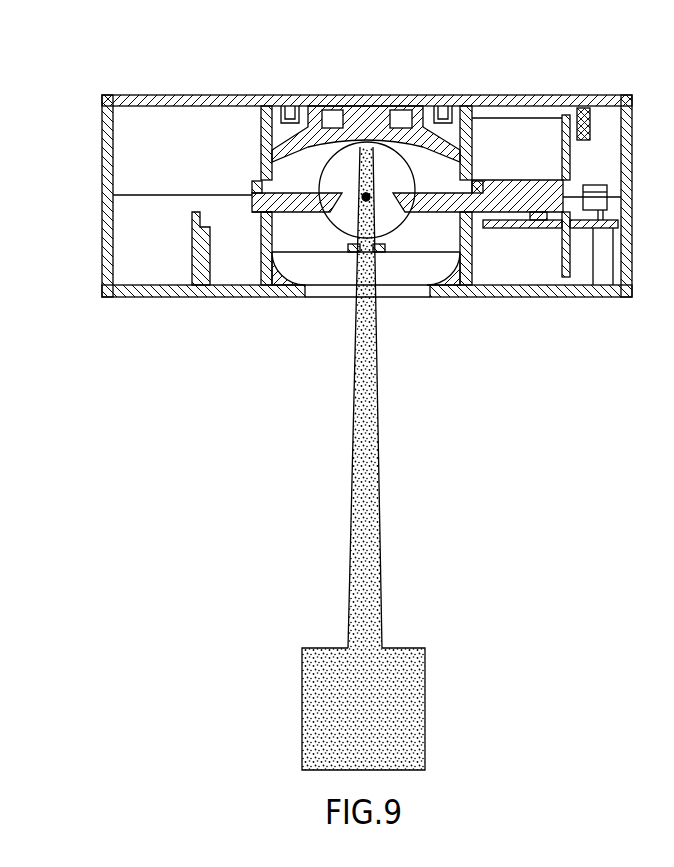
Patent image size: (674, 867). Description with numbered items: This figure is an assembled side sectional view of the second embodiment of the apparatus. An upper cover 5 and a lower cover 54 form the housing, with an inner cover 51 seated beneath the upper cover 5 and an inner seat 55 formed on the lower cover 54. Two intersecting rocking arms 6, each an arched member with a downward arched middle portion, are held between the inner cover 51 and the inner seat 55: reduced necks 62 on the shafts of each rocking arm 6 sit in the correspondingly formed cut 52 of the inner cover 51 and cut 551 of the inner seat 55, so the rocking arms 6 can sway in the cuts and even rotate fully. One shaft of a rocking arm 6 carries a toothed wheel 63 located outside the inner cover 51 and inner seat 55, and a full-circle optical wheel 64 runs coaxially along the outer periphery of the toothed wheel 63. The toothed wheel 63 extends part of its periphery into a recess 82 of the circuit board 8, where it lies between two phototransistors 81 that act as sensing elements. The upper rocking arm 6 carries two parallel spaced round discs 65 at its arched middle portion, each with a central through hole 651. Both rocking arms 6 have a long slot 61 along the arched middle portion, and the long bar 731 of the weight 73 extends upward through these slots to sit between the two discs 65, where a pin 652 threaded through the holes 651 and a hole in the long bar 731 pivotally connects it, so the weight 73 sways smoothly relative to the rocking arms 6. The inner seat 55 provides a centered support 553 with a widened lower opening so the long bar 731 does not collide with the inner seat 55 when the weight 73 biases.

The upper cover 5 is at (102, 128).
The inner cover 51 is at (266, 115).
The cut 52 is at (258, 200).
The lower cover 54 is at (147, 290).
The inner seat 55 is at (264, 252).
The cut 551 is at (255, 213).
The centered support 553 is at (298, 263).
The rocking arm 6 is at (510, 193).
The long slot 61 is at (378, 250).
The reduced neck 62 is at (253, 186).
The toothed wheel 63 is at (568, 108).
The optical wheel 64 is at (568, 135).
The round disc 65 is at (340, 173).
The central through hole 651 is at (381, 253).
The pin 652 is at (355, 225).
The circuit board 8 is at (534, 229).
The phototransistor 81 is at (597, 200).
The recess 82 is at (573, 229).
The weight 73 is at (405, 697).
The long bar 731 is at (362, 578).